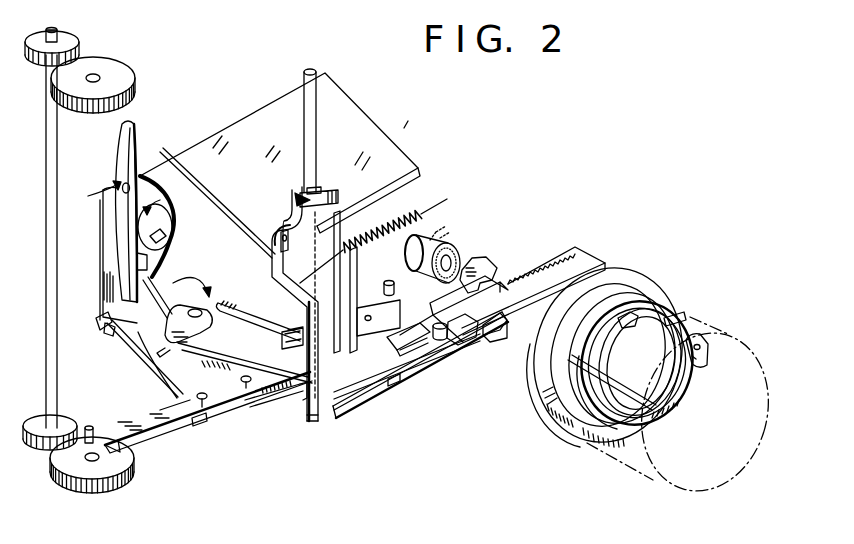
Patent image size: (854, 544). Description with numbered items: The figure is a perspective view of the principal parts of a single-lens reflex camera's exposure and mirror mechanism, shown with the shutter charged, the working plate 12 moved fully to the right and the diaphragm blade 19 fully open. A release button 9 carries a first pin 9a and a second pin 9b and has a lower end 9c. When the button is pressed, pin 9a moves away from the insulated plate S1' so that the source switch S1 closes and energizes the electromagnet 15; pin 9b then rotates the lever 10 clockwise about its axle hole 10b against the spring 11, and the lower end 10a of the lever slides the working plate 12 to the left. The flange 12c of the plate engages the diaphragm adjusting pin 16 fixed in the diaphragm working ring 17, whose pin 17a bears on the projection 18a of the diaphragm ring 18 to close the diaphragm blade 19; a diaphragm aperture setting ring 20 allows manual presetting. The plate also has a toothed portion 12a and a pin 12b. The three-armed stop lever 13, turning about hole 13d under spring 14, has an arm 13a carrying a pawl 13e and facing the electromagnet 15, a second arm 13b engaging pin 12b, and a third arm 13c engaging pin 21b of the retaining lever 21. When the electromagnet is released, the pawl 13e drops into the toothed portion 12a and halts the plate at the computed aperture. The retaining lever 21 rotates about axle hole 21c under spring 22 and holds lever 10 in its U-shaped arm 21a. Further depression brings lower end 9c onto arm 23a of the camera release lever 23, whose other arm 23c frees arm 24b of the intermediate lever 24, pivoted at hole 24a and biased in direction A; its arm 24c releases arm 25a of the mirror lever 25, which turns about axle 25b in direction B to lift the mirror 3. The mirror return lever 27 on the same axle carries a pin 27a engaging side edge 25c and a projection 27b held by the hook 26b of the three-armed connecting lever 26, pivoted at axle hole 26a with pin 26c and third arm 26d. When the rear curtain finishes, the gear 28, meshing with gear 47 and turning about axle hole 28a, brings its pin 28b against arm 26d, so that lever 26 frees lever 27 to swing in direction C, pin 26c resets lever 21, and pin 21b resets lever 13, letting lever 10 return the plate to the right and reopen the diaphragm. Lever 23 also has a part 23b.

The mirror 3 is at (355, 108).
The release button 9 is at (303, 118).
The first pin 9a is at (282, 346).
The second pin 9b is at (317, 188).
The lower end of release button 9c is at (291, 386).
The lever 10 is at (271, 270).
The lower end of lever 10a is at (316, 423).
The axle hole 10b is at (280, 217).
The spring 11 is at (414, 218).
The working plate 12 is at (350, 415).
The toothed portion 12a is at (552, 252).
The pin 12b is at (448, 340).
The flange 12c is at (492, 341).
The stop lever 13 is at (477, 306).
The arm of stop lever 13a is at (492, 262).
The second arm 13b is at (475, 338).
The third arm 13c is at (412, 340).
The hole 13d is at (422, 352).
The pawl 13e is at (512, 268).
The spring 14 is at (406, 256).
The electromagnet 15 is at (434, 228).
The diaphragm adjusting pin 16 is at (540, 365).
The diaphragm working ring 17 is at (646, 322).
The projecting pin 17a is at (639, 313).
The diaphragm ring 18 is at (683, 323).
The projection 18a is at (668, 324).
The diaphragm blade 19 is at (706, 364).
The diaphragm aperture setting ring 20 is at (621, 250).
The retaining lever 21 is at (369, 400).
The U-shaped arm 21a is at (294, 200).
The pin 21b is at (396, 388).
The axle hole 21c is at (356, 268).
The spring 22 is at (385, 287).
The camera release lever 23 is at (227, 388).
The arm of camera release lever 23a is at (302, 402).
The lever pivot screw 23b is at (245, 386).
The other arm of camera release lever 23c is at (172, 394).
The intermediate lever 24 is at (198, 342).
The hole 24a is at (172, 318).
The arm of intermediate lever 24b is at (162, 376).
The other arm of intermediate lever 24c is at (158, 274).
The mirror lever 25 is at (120, 166).
The arm of mirror lever 25a is at (133, 262).
The axle 25b is at (160, 158).
The side edge of mirror lever 25c is at (160, 253).
The three-armed connecting lever 26 is at (123, 348).
The axle hole 26a is at (196, 418).
The hook 26b is at (96, 320).
The pin 26c is at (367, 309).
The third arm 26d is at (127, 453).
The mirror return lever 27 is at (105, 237).
The pin 27a is at (167, 234).
The projection 27b is at (108, 330).
The gear 28 is at (92, 478).
The axle hole 28a is at (99, 466).
The projecting pin 28b is at (89, 423).
The gear of the rear curtain 47 is at (115, 64).
The arrow A is at (196, 284).
The arrow B is at (98, 195).
The arrow C is at (151, 212).
The source switch S1 is at (258, 312).
The insulated plate S1' is at (285, 315).